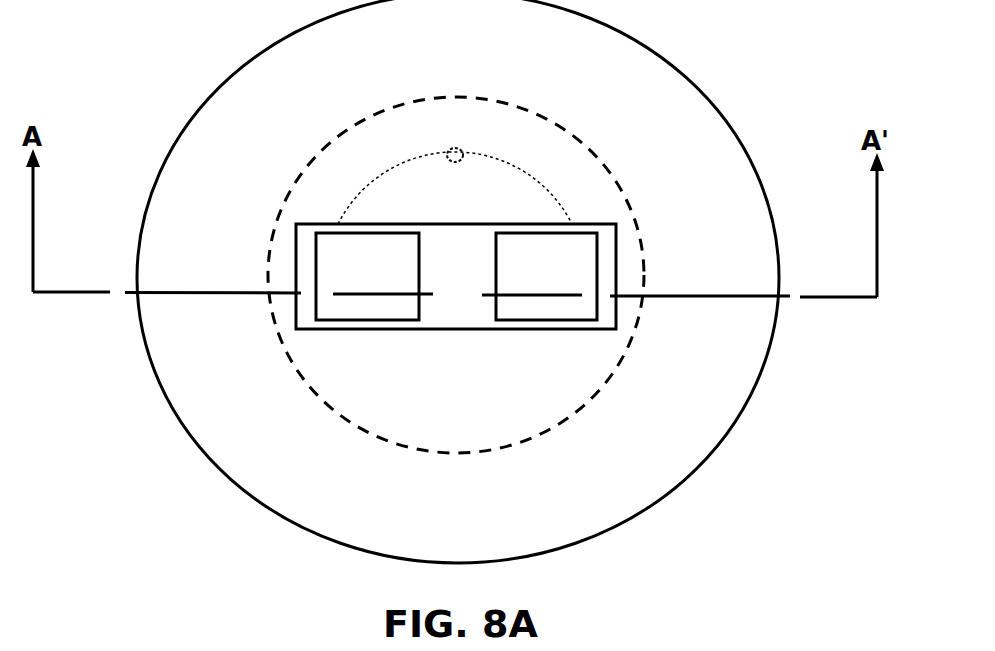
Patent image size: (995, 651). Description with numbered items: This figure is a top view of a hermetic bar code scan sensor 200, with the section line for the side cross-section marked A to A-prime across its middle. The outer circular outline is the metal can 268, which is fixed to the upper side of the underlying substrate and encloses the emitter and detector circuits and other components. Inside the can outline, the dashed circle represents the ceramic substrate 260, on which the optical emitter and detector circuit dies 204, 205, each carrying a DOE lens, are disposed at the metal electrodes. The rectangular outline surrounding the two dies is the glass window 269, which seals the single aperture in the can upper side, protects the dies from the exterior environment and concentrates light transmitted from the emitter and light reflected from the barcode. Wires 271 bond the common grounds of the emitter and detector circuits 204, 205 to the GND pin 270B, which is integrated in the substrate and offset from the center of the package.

The hermetic bar code scan sensor 200 is at (488, 281).
The optical emitter circuit die 204 is at (354, 321).
The optical detector circuit die 205 is at (556, 321).
The ceramic substrate 260 is at (353, 423).
The metal can 268 is at (690, 475).
The glass window 269 is at (616, 231).
The GND pin 270B is at (455, 149).
The wires 271 is at (360, 190).